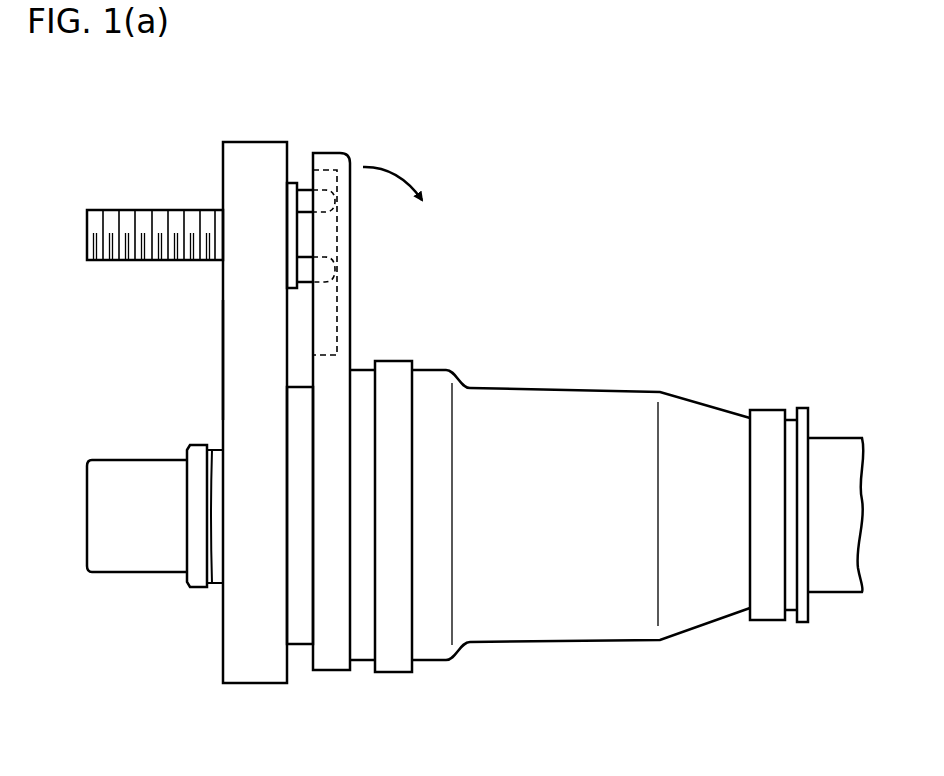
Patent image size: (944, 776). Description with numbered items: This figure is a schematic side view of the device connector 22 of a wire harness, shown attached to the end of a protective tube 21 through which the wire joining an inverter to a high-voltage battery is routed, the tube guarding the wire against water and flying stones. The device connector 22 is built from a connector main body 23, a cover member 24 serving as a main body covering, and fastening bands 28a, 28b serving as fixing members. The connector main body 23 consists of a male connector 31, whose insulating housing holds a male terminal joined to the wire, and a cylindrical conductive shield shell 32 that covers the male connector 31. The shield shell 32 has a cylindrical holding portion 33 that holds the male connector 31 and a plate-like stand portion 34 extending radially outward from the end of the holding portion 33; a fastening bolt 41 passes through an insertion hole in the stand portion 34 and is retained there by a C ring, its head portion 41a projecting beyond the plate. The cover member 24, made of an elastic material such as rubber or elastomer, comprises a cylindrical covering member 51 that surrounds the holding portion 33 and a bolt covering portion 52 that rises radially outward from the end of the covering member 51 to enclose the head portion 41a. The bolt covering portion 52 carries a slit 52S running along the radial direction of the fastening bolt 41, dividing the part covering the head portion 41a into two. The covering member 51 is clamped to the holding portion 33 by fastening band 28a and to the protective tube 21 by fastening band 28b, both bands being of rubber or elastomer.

The protective tube 21 is at (840, 438).
The device connector 22 is at (769, 220).
The connector main body 23 is at (198, 176).
The cover member 24 is at (671, 301).
The fastening band 28a is at (378, 361).
The fastening band 28b is at (765, 410).
The male connector 31 is at (128, 460).
The shield shell 32 is at (235, 363).
The holding portion 33 is at (303, 645).
The stand portion 34 is at (247, 142).
The fastening bolt 41 is at (133, 262).
The head portion 41a is at (306, 187).
The covering member 51 is at (558, 388).
The bolt covering portion 52 is at (350, 237).
The slit 52S is at (345, 343).